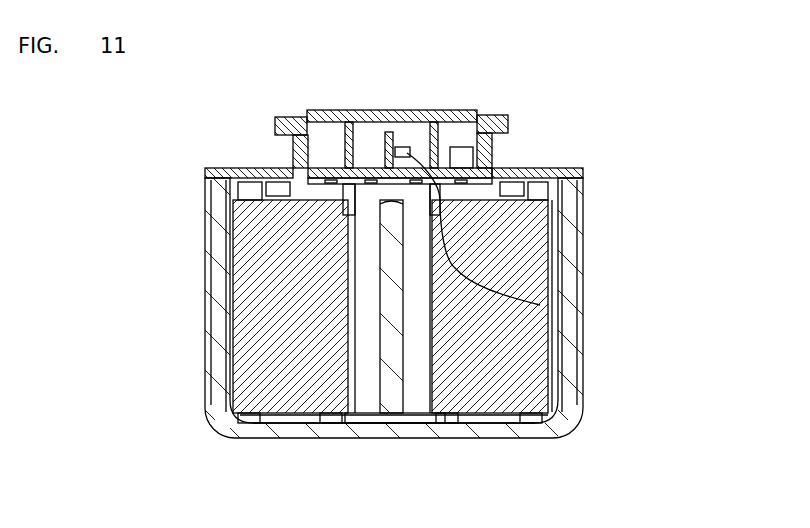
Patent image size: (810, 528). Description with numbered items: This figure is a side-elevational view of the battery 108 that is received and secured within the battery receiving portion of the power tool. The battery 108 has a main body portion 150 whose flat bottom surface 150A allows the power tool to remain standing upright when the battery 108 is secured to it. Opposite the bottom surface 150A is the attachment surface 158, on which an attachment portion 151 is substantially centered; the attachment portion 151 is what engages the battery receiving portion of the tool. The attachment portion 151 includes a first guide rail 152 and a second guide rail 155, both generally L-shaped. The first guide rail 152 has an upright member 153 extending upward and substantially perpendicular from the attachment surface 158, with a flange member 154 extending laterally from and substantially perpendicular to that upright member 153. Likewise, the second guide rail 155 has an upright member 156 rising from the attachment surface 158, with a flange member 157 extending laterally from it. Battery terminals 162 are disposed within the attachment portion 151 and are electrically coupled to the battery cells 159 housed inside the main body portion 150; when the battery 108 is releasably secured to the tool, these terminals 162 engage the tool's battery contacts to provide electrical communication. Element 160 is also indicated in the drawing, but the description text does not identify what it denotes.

The battery 108 is at (690, 108).
The main body portion 150 is at (568, 378).
The flat bottom surface 150A is at (410, 438).
The attachment portion 151 is at (277, 103).
The first guide rail 152 is at (512, 152).
The upright member 153 is at (510, 145).
The flange member 154 is at (488, 113).
The second guide rail 155 is at (252, 152).
The upright member 156 is at (293, 150).
The flange member 157 is at (275, 123).
The attachment surface 158 is at (558, 168).
The battery cells 159 is at (497, 377).
The top plate 160 is at (357, 110).
The battery terminals 162 is at (540, 305).